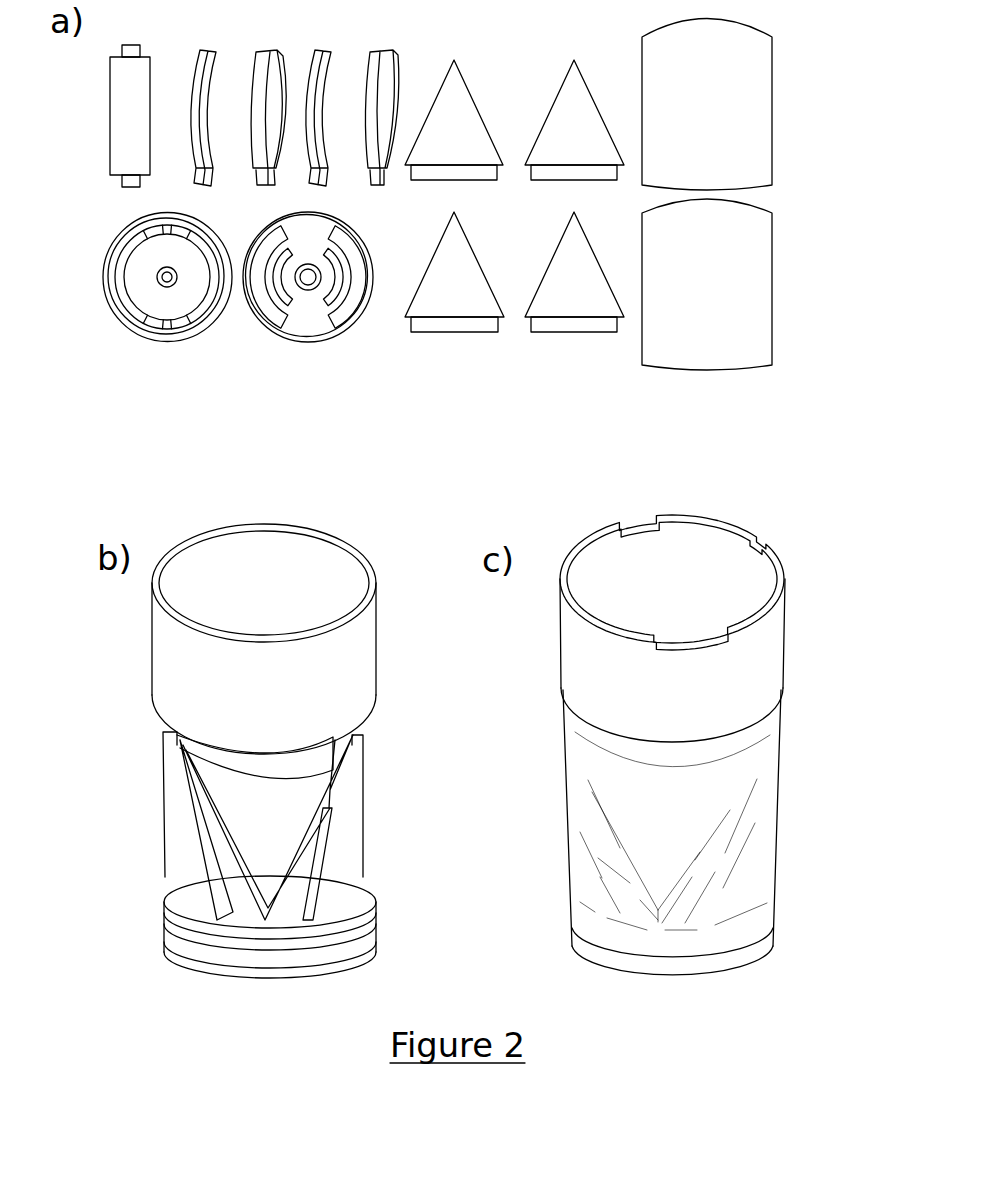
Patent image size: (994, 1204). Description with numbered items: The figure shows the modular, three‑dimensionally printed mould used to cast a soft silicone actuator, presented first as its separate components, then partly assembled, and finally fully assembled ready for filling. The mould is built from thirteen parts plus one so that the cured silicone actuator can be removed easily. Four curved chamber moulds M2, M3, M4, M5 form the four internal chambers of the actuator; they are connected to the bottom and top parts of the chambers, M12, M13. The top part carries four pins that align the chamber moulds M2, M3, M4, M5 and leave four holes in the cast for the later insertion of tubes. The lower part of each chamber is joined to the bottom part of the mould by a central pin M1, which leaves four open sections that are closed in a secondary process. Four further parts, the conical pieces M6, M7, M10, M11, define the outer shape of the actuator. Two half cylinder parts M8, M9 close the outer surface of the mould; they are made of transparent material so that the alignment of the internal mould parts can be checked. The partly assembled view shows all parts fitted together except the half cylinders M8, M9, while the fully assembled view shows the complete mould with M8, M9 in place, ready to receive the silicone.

The central pin M1 is at (130, 97).
The chamber mould M2 is at (206, 96).
The chamber mould M3 is at (267, 96).
The chamber mould M4 is at (324, 96).
The chamber mould M5 is at (383, 96).
The outer shape mould part M6 is at (454, 93).
The outer shape mould part M7 is at (574, 93).
The half cylinder part M8 is at (727, 99).
The half cylinder part M9 is at (732, 290).
The outer shape mould part M10 is at (574, 296).
The outer shape mould part M11 is at (454, 296).
The bottom/top chamber part M12 is at (308, 296).
The bottom/top chamber part M13 is at (167, 297).